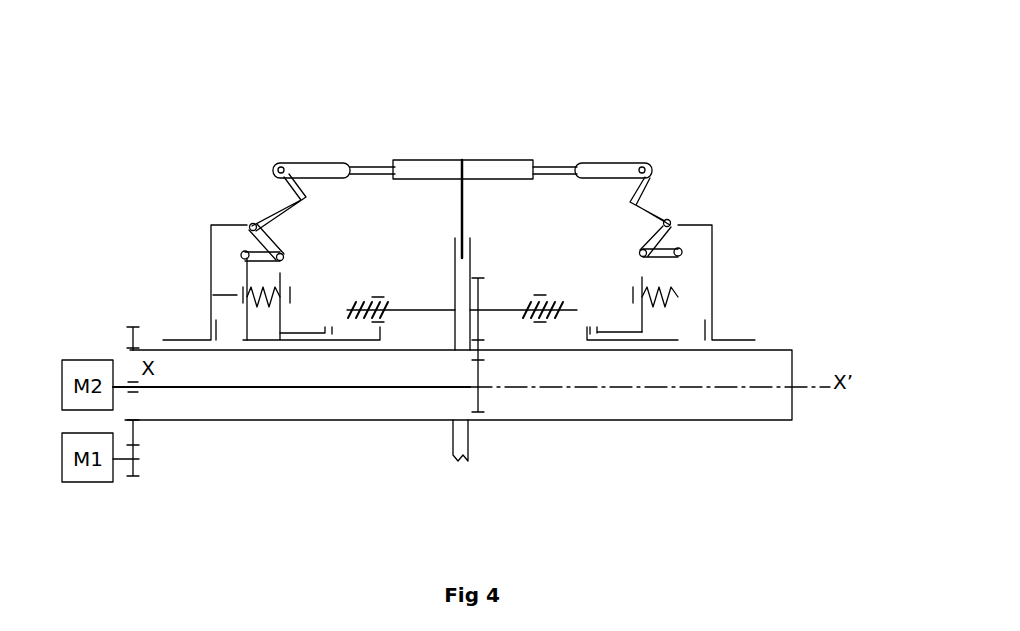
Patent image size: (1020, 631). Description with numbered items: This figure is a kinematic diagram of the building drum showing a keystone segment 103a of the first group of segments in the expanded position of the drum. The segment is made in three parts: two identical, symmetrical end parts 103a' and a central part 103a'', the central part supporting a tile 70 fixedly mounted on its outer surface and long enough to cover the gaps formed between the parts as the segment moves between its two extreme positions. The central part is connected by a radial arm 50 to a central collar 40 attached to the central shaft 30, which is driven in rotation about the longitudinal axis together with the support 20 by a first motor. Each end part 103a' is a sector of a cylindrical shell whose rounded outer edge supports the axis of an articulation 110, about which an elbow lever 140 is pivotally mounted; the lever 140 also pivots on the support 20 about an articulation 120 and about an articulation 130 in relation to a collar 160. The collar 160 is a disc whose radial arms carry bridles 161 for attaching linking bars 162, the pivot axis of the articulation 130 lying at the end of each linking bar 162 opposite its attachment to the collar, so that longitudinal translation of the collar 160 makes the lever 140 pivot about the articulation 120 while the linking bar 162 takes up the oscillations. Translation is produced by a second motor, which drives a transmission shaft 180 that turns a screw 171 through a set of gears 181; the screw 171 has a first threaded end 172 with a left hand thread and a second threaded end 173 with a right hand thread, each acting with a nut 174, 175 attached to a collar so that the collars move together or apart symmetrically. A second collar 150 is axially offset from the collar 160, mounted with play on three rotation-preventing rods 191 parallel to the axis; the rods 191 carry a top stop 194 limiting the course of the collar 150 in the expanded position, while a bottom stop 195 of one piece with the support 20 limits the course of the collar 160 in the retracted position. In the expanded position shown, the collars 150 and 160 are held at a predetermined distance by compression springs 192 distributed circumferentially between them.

The support 20 is at (212, 225).
The central shaft 30 is at (770, 423).
The central collar 40 is at (457, 445).
The radial arm 50 is at (462, 160).
The tile 70 is at (568, 157).
The keystone segment 103a is at (432, 90).
The end part 103a' is at (518, 108).
The central part 103a'' is at (486, 104).
The articulation 110 is at (282, 163).
The articulation 120 is at (250, 222).
The articulation 130 is at (283, 256).
The elbow lever 140 is at (636, 213).
The collar 150 is at (278, 340).
The collar 160 is at (243, 340).
The bridle 161 is at (245, 255).
The linking bar 162 is at (248, 228).
The screw 171 is at (502, 310).
The first threaded end 172 is at (387, 318).
The second threaded end 173 is at (547, 322).
The nut 174 is at (378, 297).
The nut 175 is at (542, 295).
The transmission shaft 180 is at (367, 388).
The set of gears 181 is at (495, 360).
The rotation-preventing rod 191 is at (220, 295).
The compression spring 192 is at (255, 298).
The top stop 194 is at (290, 288).
The bottom stop 195 is at (213, 318).